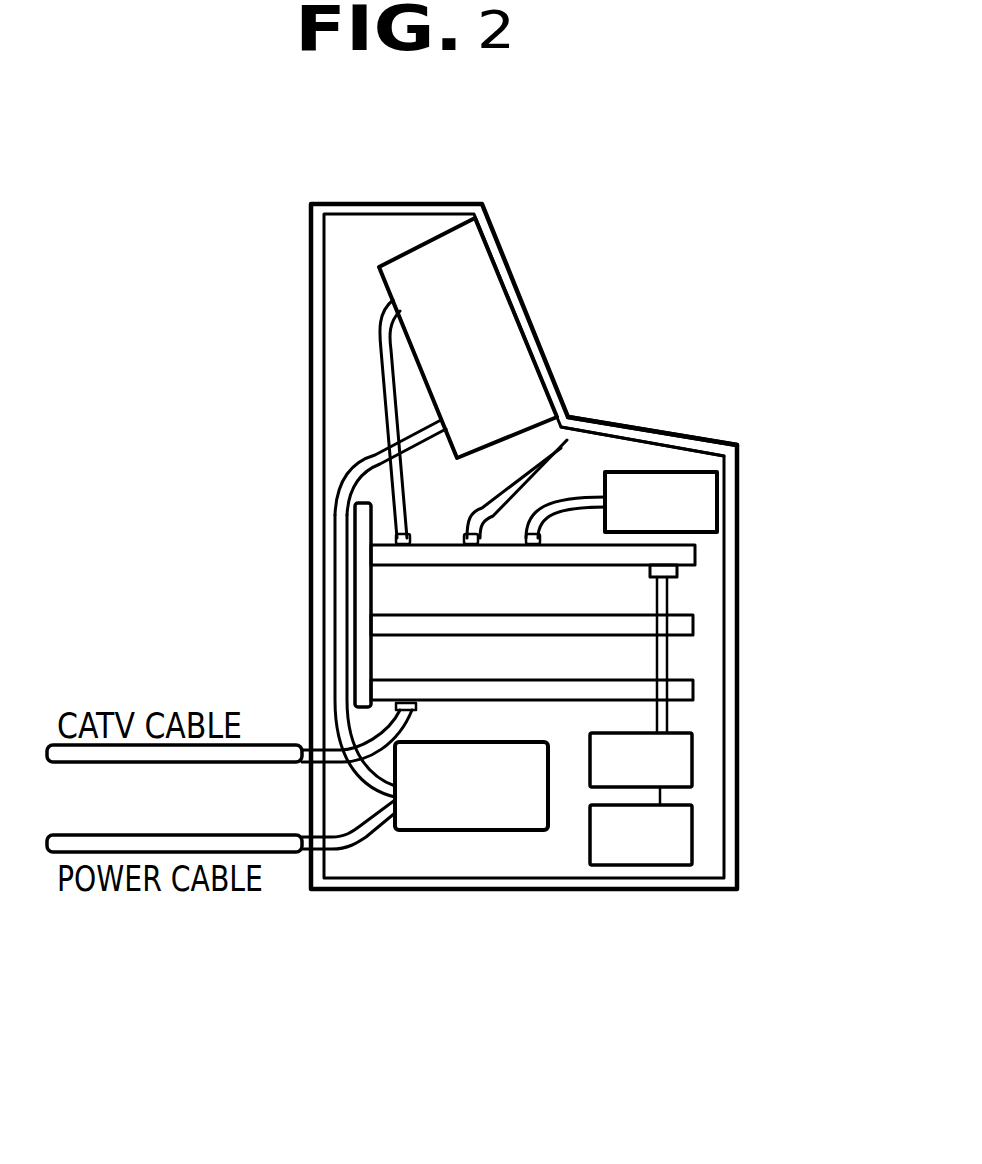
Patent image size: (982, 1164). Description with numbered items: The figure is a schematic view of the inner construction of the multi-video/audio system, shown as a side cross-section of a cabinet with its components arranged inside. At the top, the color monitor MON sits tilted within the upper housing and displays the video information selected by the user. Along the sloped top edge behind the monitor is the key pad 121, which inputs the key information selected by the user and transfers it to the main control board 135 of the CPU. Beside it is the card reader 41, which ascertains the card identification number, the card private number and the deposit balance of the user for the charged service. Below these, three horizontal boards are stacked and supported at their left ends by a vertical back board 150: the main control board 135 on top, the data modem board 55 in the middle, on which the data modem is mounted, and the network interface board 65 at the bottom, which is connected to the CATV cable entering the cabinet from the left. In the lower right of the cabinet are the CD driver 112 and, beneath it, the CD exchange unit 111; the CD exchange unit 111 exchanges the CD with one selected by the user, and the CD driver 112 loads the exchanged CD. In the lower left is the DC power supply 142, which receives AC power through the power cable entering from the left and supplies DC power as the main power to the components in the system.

The color monitor MON is at (497, 323).
The key pad 121 is at (668, 447).
The card reader 41 is at (710, 503).
The main control board 135 is at (693, 553).
The data modem board 55 is at (685, 621).
The network interface board 65 is at (683, 690).
The CD driver 112 is at (682, 763).
The CD exchange unit 111 is at (677, 832).
The back board 150 is at (362, 578).
The DC power supply 142 is at (483, 808).